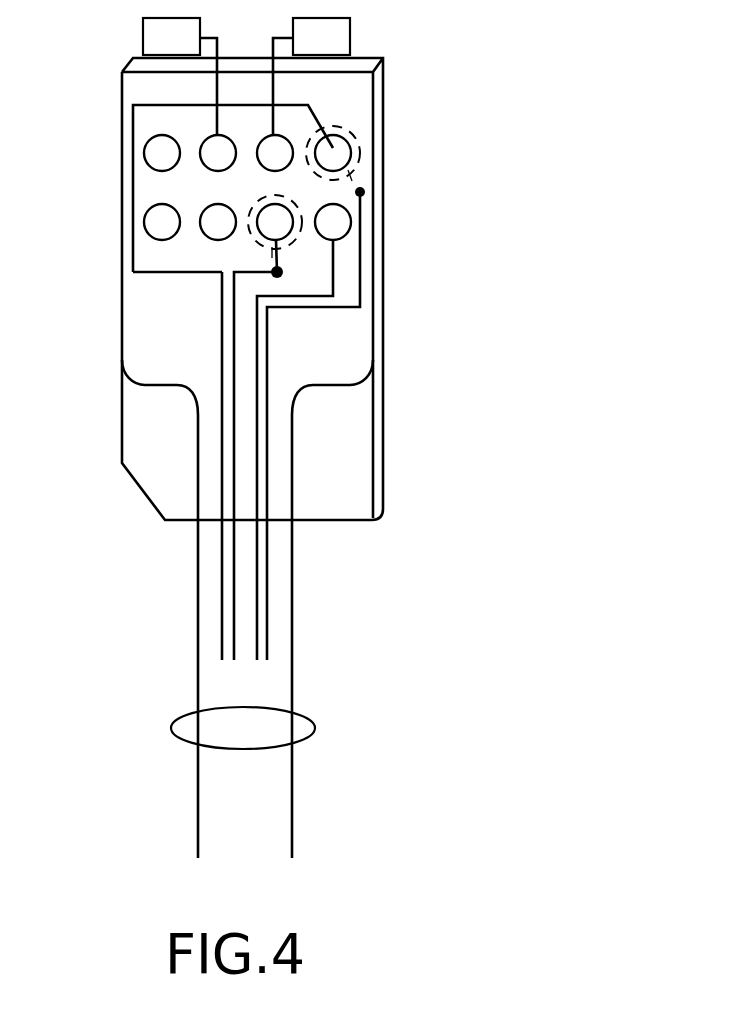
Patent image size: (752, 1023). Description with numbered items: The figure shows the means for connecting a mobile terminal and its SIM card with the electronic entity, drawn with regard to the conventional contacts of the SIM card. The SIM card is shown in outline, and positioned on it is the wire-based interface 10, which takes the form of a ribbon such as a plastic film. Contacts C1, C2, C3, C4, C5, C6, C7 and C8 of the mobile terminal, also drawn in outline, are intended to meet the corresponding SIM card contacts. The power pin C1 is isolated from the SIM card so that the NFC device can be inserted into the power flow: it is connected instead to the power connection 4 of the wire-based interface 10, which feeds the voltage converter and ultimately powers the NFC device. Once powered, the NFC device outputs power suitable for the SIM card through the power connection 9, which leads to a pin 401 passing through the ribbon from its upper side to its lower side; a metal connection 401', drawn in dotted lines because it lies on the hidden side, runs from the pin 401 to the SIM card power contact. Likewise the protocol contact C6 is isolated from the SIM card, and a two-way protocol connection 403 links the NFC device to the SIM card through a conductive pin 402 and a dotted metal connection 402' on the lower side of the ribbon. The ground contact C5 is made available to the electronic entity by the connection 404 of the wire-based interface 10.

The power pin contact C1 is at (337, 148).
The mobile terminal contact C2 is at (303, 94).
The mobile terminal contact C3 is at (189, 94).
The mobile terminal contact C4 is at (158, 147).
The ground contact C5 is at (340, 217).
The protocol data contact C6 is at (275, 215).
The mobile terminal contact C7 is at (218, 232).
The mobile terminal contact C8 is at (157, 220).
The pin 401 is at (401, 401).
The metal connection 401' is at (415, 138).
The conductive pin 402 is at (370, 285).
The metal connection 402' is at (384, 236).
The two-way protocol connection 403 is at (221, 554).
The ground connection 404 is at (268, 602).
The power connection 4 is at (220, 602).
The power connection 9 is at (268, 554).
The wire-based interface 10 is at (316, 728).